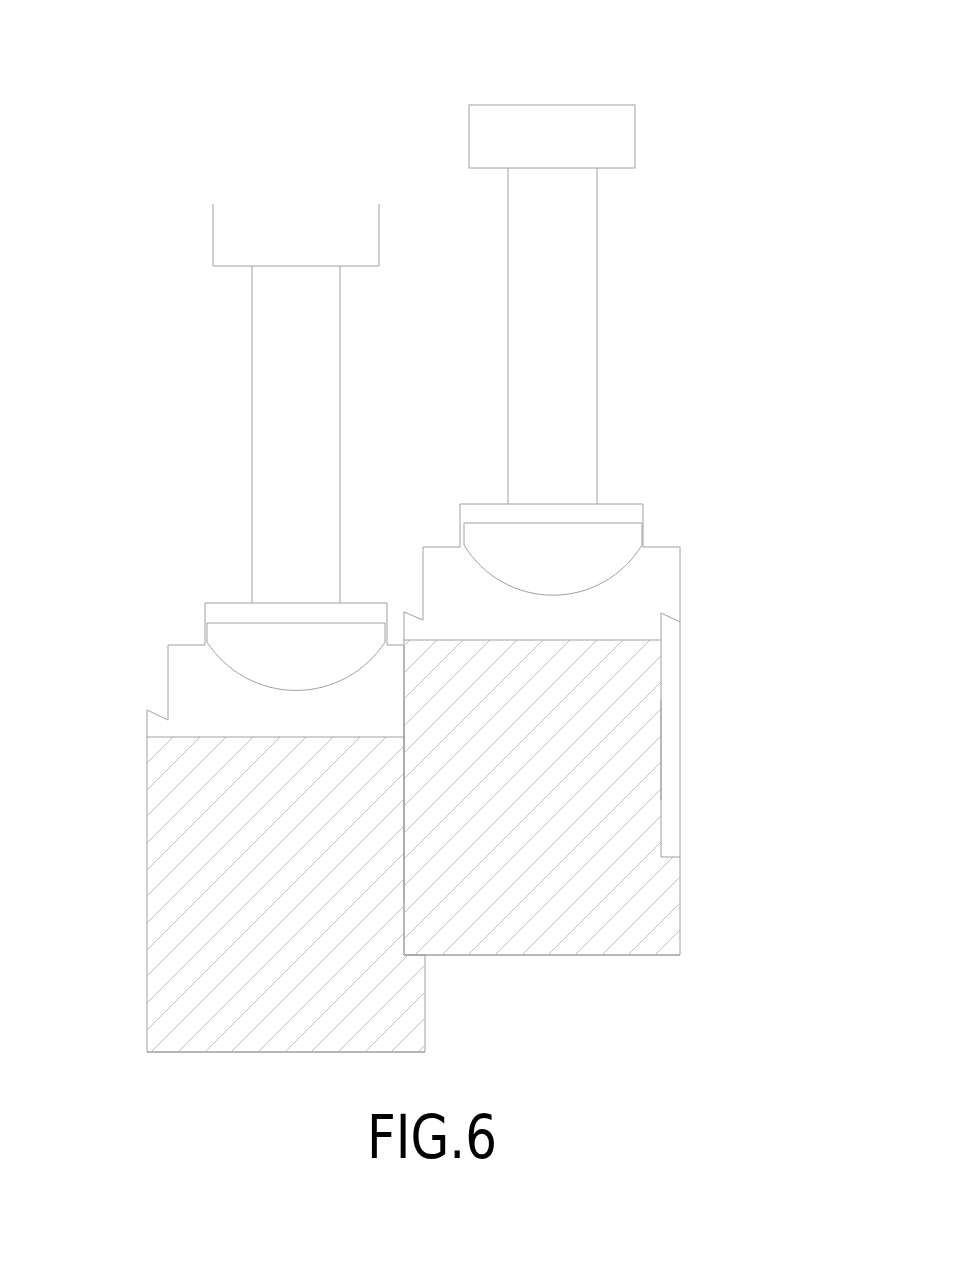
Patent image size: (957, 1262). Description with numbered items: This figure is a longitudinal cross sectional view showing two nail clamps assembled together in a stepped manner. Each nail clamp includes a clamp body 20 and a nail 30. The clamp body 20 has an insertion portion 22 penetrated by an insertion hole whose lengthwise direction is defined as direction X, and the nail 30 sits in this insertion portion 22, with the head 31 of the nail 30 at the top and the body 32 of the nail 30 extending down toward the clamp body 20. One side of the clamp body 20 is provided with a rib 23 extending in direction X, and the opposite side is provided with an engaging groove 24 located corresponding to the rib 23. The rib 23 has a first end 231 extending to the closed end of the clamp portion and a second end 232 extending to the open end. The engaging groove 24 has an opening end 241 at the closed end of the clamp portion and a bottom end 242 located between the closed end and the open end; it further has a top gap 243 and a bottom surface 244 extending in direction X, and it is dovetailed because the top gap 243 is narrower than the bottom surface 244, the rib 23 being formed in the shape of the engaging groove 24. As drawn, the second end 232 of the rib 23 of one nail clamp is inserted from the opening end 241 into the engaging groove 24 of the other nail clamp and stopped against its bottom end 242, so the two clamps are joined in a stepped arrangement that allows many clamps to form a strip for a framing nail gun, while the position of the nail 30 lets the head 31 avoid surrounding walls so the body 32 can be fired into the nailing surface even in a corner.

The clamp body 20 is at (478, 550).
The insertion portion 22 is at (227, 610).
The rib 23 is at (478, 550).
The first end 231 is at (158, 739).
The second end 232 is at (158, 1053).
The engaging groove 24 is at (478, 550).
The opening end 241 is at (669, 617).
The bottom end 242 is at (669, 857).
The top gap 243 is at (680, 787).
The bottom surface 244 is at (661, 742).
The nail 30 is at (451, 304).
The head 31 is at (615, 153).
The body 32 is at (576, 358).